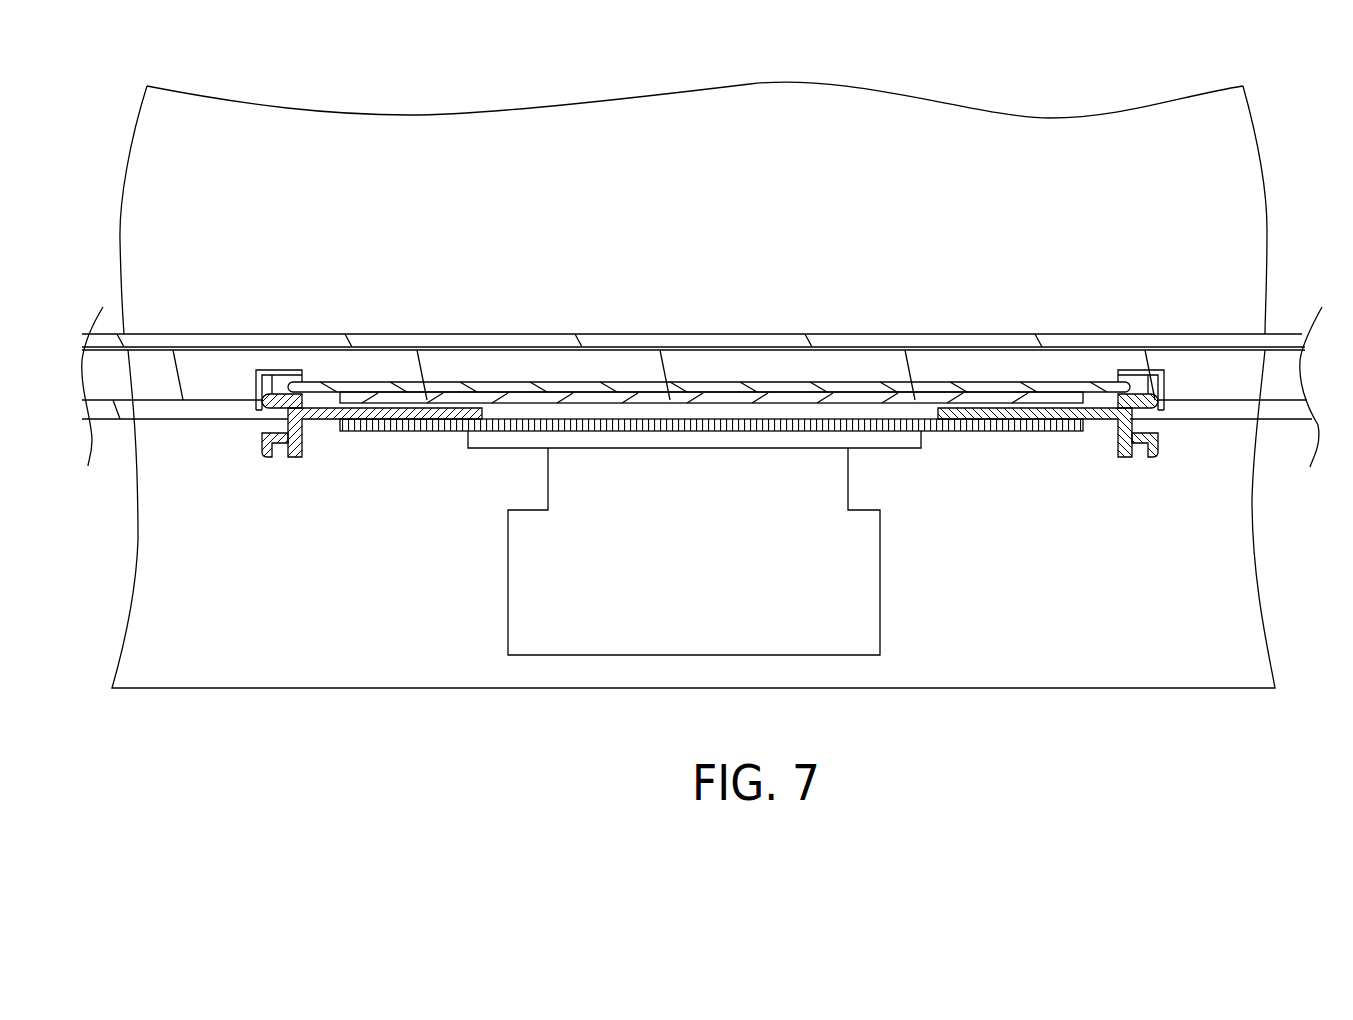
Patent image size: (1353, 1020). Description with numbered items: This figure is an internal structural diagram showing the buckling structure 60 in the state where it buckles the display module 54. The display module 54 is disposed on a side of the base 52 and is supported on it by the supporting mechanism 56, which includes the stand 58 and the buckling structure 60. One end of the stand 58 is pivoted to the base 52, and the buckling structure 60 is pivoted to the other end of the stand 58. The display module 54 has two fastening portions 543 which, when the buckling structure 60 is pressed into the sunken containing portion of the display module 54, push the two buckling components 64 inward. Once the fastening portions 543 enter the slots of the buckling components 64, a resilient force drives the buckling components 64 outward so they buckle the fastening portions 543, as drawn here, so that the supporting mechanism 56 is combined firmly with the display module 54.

The base 52 is at (1247, 128).
The display module 54 is at (1280, 318).
The fastening portions 543 is at (277, 413).
The supporting mechanism 56 is at (709, 518).
The stand 58 is at (726, 543).
The buckling structure 60 is at (1017, 445).
The buckling components 64 is at (281, 450).